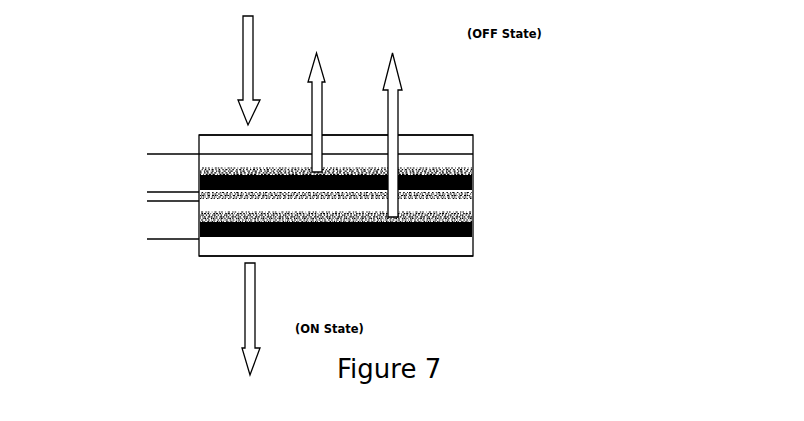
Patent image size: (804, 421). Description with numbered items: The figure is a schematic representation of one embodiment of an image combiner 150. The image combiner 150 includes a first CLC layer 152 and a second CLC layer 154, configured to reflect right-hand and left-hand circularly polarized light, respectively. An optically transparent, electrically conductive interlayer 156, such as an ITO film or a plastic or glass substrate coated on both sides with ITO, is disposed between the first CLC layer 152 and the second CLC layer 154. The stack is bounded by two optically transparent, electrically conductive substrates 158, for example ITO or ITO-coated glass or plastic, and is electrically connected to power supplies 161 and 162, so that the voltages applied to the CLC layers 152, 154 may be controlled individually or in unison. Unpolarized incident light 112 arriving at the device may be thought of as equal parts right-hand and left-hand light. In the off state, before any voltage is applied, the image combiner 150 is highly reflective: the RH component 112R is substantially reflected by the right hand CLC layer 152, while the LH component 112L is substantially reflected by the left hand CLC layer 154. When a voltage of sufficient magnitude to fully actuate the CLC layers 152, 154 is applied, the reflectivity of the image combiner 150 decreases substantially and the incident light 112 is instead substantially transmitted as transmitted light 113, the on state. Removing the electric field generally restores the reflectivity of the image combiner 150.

The image combiner 150 is at (141, 95).
The incident light 112 is at (230, 70).
The RH component 112R is at (322, 101).
The LH component 112L is at (408, 123).
The transmitted light 113 is at (273, 319).
The first CLC layer 152 is at (473, 169).
The second CLC layer 154 is at (473, 217).
The interlayer 156 is at (438, 244).
The substrates 158 is at (473, 133).
The power supply 161 is at (145, 173).
The power supply 162 is at (145, 218).